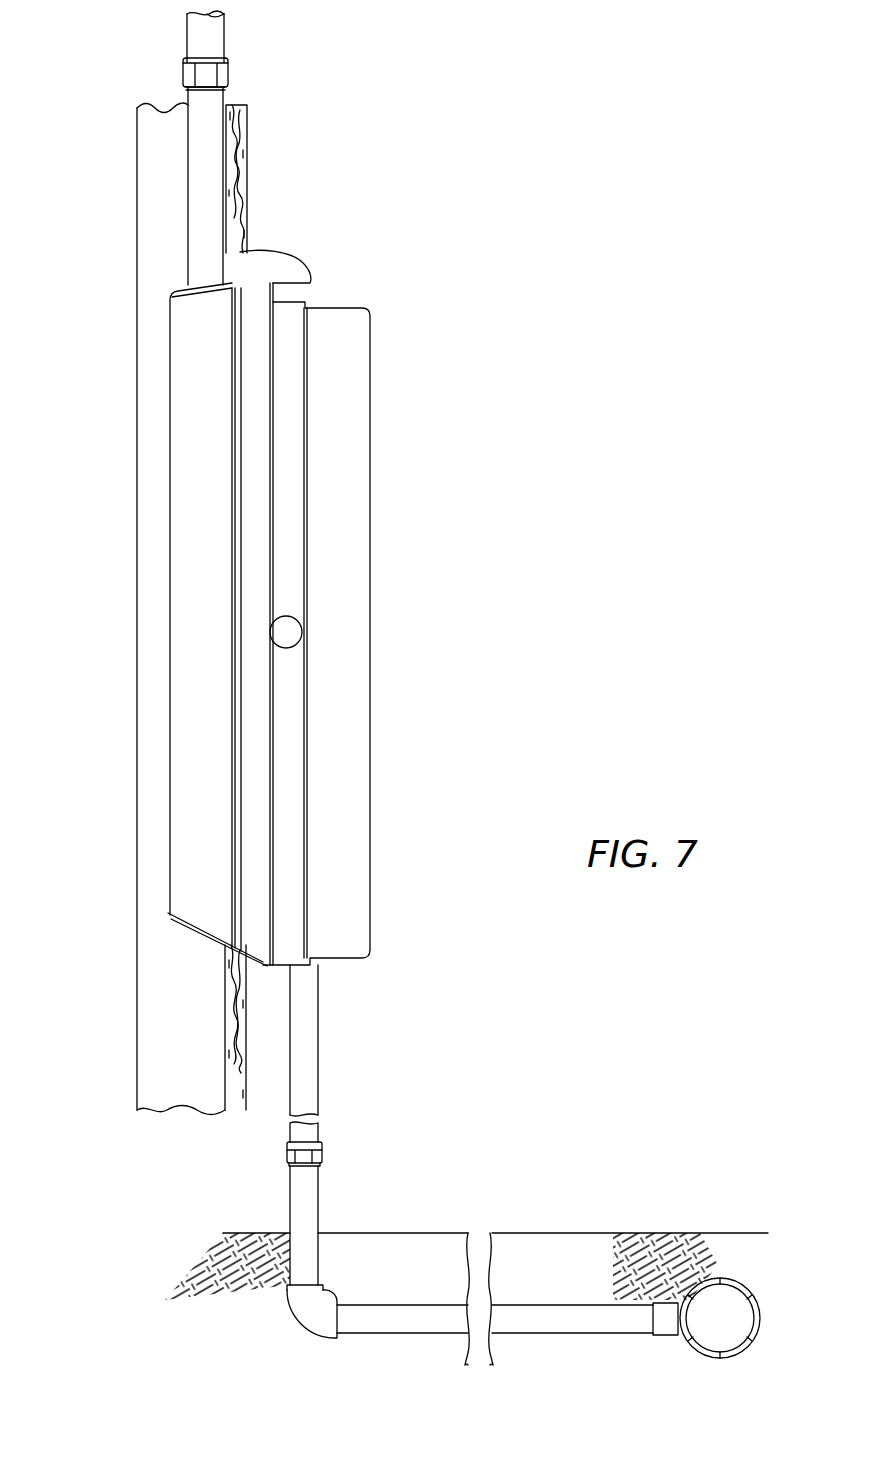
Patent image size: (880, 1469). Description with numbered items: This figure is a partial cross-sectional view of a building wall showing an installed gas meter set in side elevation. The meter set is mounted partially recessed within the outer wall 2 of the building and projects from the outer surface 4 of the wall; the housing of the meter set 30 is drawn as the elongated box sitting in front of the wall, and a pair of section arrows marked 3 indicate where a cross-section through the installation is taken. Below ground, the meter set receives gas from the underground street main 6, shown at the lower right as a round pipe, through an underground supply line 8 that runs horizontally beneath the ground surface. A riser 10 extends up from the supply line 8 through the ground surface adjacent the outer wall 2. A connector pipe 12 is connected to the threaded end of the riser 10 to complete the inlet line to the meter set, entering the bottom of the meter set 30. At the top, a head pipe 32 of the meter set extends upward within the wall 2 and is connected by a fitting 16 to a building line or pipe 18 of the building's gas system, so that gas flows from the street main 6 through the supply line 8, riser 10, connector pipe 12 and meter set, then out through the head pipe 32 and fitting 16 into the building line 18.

The outer wall 2 is at (181, 1140).
The section line 3- 3 is at (137, 338).
The outer surface 4 is at (267, 218).
The underground street main 6 is at (752, 1287).
The underground supply line 8 is at (417, 1320).
The riser 10 is at (308, 1198).
The connector pipe 12 is at (305, 1035).
The fitting 16 is at (207, 72).
The building line 18 is at (225, 32).
The protective cover housing 30 is at (383, 775).
The head pipe 32 is at (208, 182).